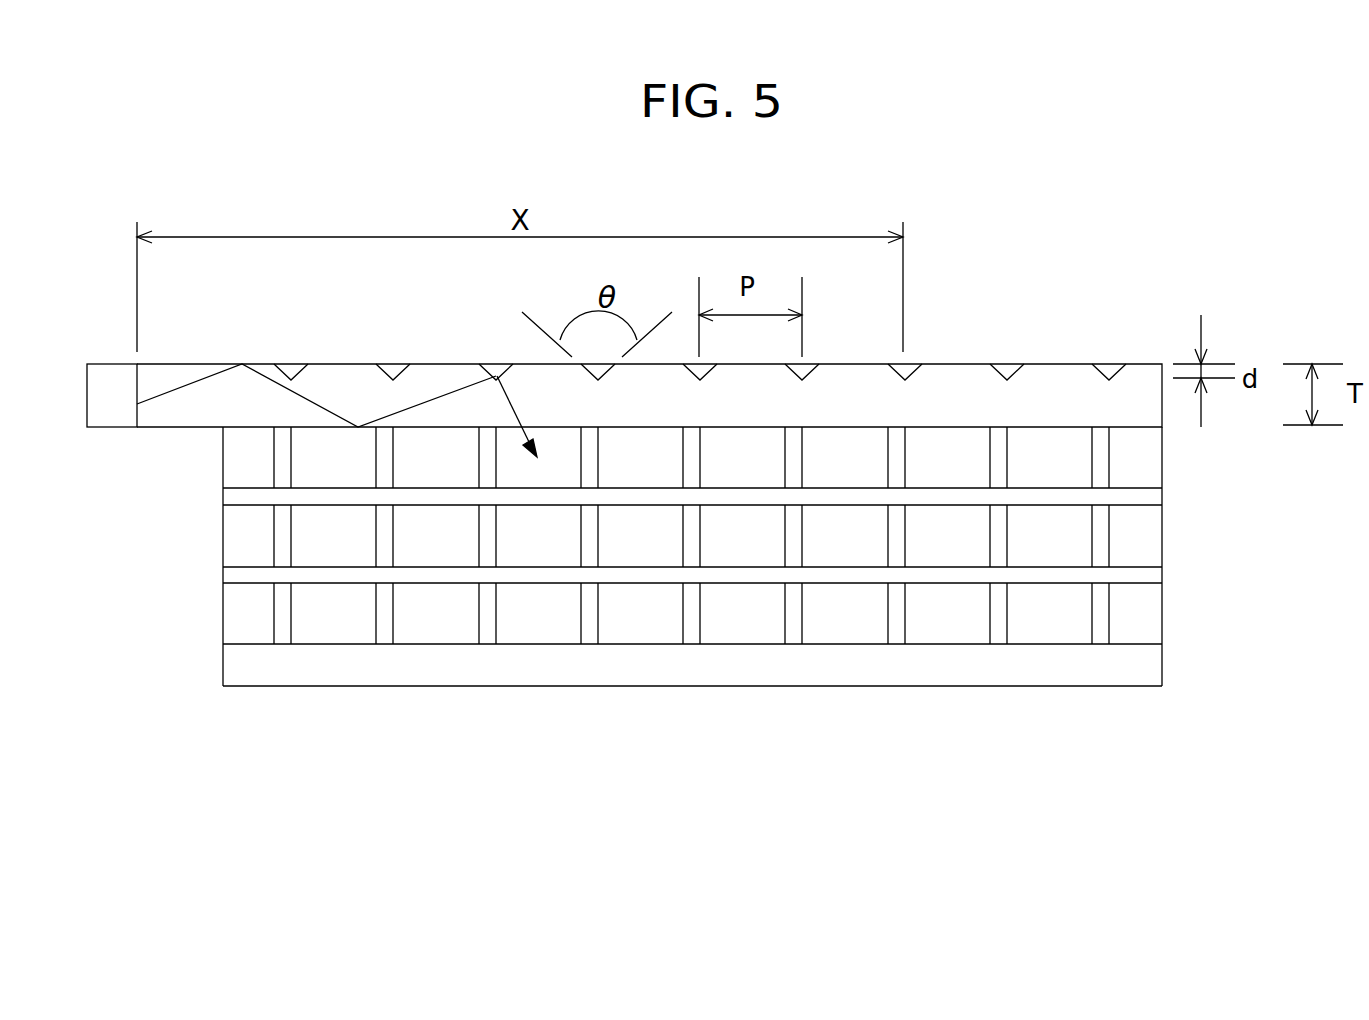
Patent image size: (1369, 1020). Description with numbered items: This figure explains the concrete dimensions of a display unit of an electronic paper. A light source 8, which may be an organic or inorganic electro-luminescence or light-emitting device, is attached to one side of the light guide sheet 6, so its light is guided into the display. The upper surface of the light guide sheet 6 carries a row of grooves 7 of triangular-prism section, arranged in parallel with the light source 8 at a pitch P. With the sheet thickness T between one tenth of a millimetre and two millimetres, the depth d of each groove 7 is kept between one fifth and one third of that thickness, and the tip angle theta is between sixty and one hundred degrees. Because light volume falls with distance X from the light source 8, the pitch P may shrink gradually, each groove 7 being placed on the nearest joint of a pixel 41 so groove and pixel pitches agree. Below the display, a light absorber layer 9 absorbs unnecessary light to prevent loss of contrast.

The light guide sheet 6 is at (947, 375).
The groove 7 is at (396, 372).
The light source 8 is at (110, 377).
The light absorber layer 9 is at (776, 675).
The pixel 41 is at (1060, 613).